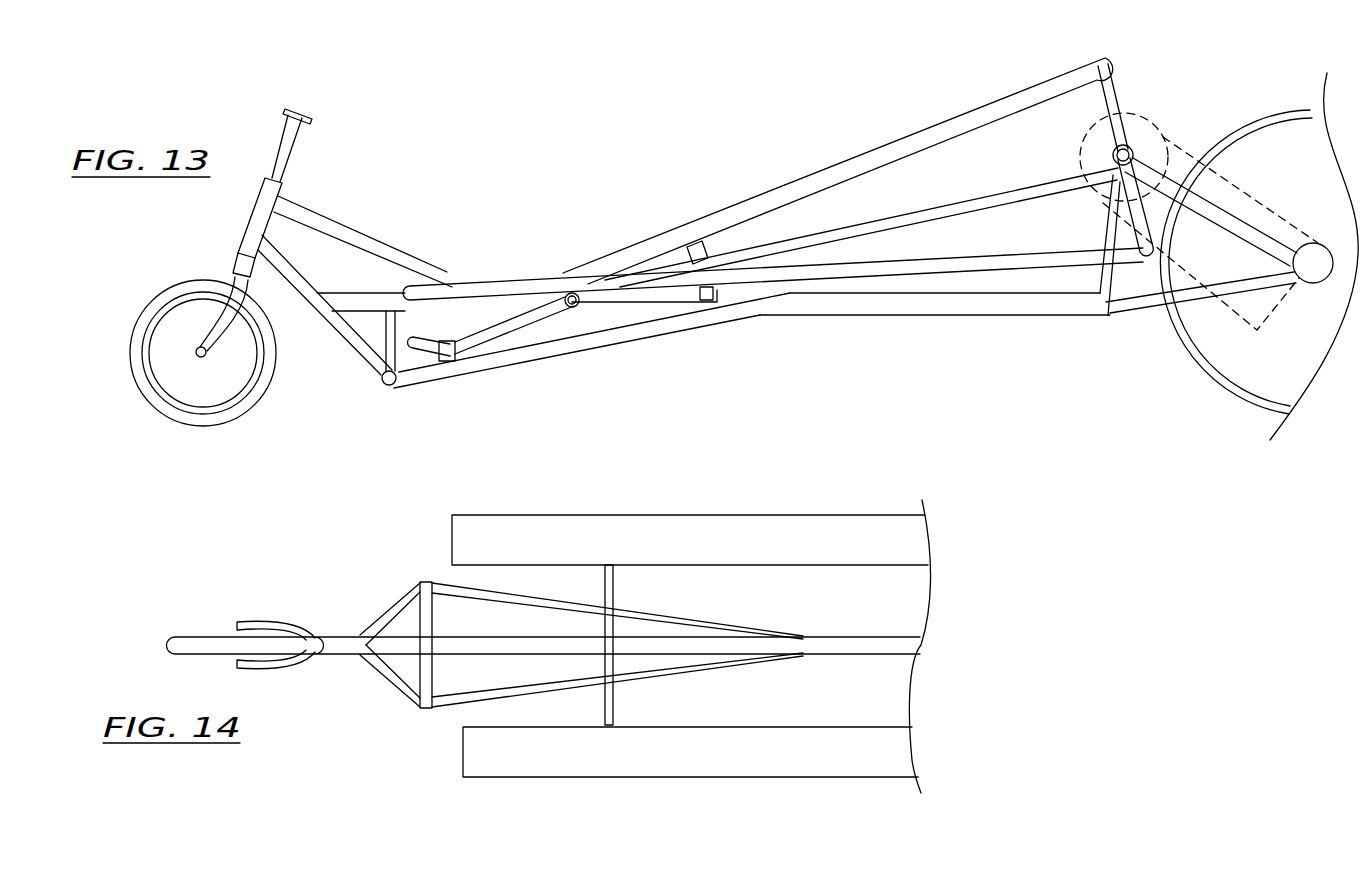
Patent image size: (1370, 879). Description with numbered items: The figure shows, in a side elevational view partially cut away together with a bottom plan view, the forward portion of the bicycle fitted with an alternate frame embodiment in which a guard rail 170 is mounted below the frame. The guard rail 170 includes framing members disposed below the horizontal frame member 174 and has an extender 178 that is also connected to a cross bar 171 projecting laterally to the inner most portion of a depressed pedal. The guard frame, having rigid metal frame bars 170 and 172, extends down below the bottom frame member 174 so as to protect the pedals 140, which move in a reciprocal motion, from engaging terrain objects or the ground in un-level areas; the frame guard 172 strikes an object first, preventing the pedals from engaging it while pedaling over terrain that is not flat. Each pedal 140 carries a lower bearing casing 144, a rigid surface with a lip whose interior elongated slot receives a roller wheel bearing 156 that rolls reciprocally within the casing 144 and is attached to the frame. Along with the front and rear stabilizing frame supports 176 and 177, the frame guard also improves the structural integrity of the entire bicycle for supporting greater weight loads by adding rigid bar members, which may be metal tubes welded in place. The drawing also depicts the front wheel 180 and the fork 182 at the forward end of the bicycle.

In FIG. 13, the pedal 140 is at (494, 278).
In FIG. 14, the pedal 140 is at (884, 553).
In FIG. 13, the bearing casing 144 is at (650, 305).
In FIG. 13, the roller wheel bearing 156 is at (578, 310).
In FIG. 13, the guard rail 170 is at (521, 365).
In FIG. 14, the guard rail 170 is at (652, 660).
In FIG. 13, the cross bar 171 is at (378, 388).
In FIG. 14, the cross bar 171 is at (410, 667).
In FIG. 13, the frame guard 172 is at (347, 343).
In FIG. 14, the frame guard 172 is at (390, 682).
In FIG. 13, the horizontal frame member 174 is at (372, 298).
In FIG. 14, the horizontal frame member 174 is at (830, 645).
In FIG. 13, the front stabilizing frame support 176 is at (330, 215).
In FIG. 13, the rear stabilizing frame support 177 is at (921, 198).
In FIG. 13, the extender 178 is at (395, 386).
In FIG. 13, the front wheel 180 is at (265, 387).
In FIG. 13, the front fork 182 is at (233, 284).